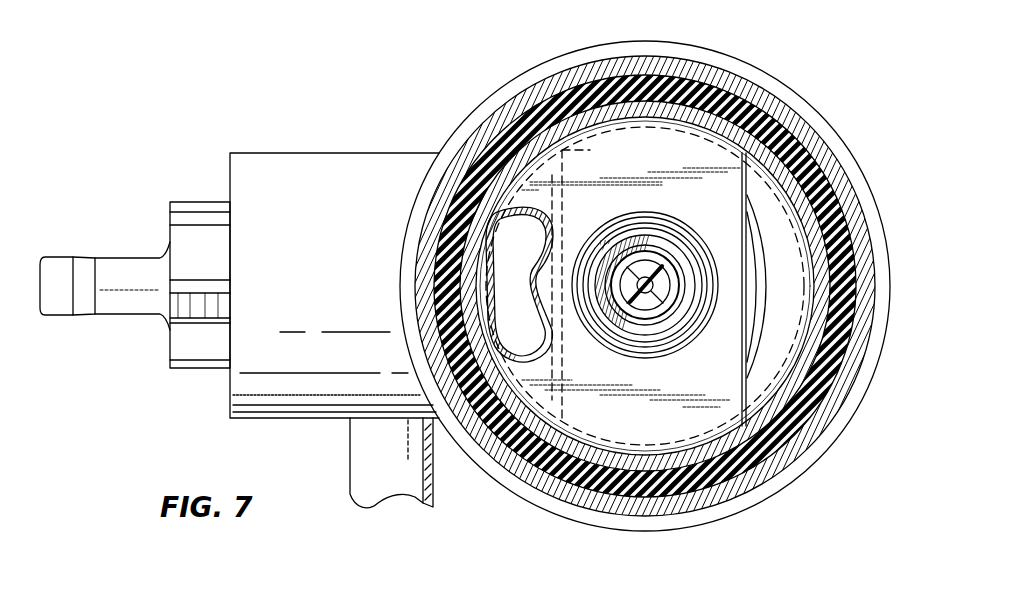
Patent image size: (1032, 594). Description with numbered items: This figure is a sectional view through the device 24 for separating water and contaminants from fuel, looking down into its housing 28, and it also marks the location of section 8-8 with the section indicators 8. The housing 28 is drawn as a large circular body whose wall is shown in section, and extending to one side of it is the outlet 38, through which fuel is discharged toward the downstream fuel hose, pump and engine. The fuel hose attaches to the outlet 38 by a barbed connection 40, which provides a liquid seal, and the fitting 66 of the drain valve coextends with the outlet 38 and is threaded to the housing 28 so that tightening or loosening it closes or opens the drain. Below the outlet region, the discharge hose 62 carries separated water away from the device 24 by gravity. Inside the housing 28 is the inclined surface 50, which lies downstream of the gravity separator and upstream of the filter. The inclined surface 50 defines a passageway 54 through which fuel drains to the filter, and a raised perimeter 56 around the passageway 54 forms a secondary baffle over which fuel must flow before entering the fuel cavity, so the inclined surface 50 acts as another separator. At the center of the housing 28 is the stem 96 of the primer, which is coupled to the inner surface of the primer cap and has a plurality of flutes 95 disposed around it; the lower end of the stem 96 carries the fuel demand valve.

The device 24 is at (790, 56).
The housing 28 is at (808, 106).
The outlet 38 is at (135, 310).
The barbed connection 40 is at (76, 236).
The inclined surface 50 is at (635, 157).
The passageway 54 is at (337, 297).
The raised perimeter 56 is at (543, 210).
The discharge hose 62 is at (437, 470).
The fitting 66 is at (193, 352).
The flutes 95 is at (442, 297).
The stem 96 is at (668, 285).
The section line 8- 8 is at (393, 113).